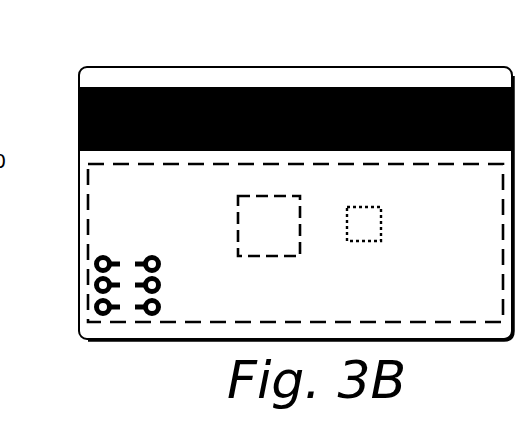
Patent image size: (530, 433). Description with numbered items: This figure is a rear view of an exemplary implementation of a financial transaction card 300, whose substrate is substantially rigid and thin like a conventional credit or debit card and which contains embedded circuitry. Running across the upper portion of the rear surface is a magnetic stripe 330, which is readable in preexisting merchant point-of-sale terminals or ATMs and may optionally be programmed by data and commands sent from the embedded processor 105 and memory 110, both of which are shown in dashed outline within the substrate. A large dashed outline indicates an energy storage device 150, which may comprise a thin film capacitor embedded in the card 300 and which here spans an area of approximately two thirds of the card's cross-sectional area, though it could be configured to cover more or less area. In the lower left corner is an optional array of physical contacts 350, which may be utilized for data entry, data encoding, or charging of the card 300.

The financial transaction card 300 is at (383, 67).
The magnetic stripe 330 is at (161, 87).
The energy storage device 150 is at (420, 322).
The embedded processor 105 is at (291, 194).
The memory 110 is at (365, 207).
The array of physical contacts 350 is at (102, 314).